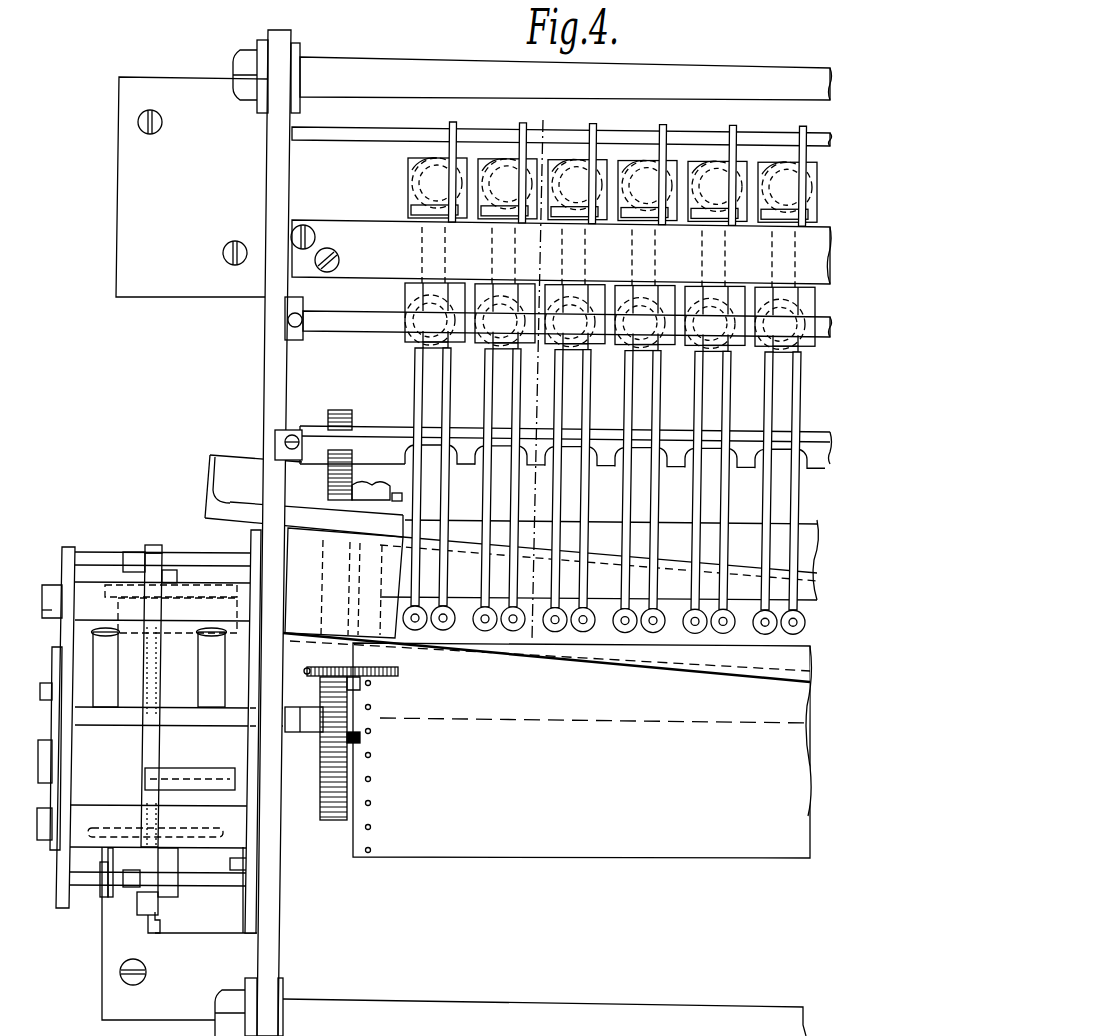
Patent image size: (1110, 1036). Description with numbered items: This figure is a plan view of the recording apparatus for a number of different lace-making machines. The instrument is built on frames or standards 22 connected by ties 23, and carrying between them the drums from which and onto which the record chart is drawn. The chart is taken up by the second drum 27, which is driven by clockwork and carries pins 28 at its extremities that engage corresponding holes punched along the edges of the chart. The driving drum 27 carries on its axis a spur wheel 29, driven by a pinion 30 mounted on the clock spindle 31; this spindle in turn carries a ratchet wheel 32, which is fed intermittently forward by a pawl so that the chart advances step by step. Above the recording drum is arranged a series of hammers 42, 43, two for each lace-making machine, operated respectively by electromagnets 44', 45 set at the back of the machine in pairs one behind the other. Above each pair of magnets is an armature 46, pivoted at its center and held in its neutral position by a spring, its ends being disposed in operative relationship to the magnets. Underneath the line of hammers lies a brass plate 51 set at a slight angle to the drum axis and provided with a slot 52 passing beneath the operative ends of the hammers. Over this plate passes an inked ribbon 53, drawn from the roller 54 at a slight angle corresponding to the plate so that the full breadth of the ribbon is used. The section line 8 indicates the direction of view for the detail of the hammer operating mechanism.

The section line 8- 8 is at (546, 116).
The frame or standard 22 is at (266, 360).
The tie 23 is at (576, 1015).
The second drum 27 is at (534, 705).
The pin 28 is at (371, 780).
The spur wheel 29 is at (320, 806).
The pinion 30 is at (361, 740).
The clock spindle 31 is at (304, 735).
The ratchet wheel 32 is at (160, 731).
The hammer 42 is at (766, 500).
The hammer 43 is at (799, 512).
The electromagnet 44' is at (571, 478).
The electromagnet 45 is at (672, 141).
The armature 46 is at (410, 290).
The brass plate 51 is at (687, 667).
The slot 52 is at (726, 632).
The inked ribbon 53 is at (608, 651).
The roller 54 is at (363, 624).